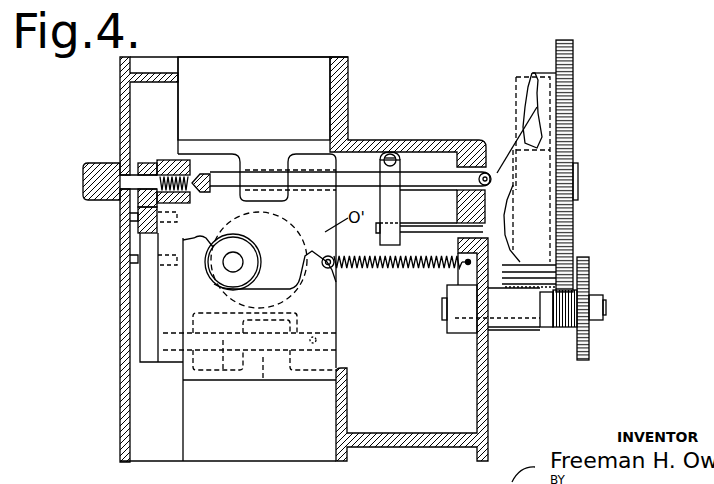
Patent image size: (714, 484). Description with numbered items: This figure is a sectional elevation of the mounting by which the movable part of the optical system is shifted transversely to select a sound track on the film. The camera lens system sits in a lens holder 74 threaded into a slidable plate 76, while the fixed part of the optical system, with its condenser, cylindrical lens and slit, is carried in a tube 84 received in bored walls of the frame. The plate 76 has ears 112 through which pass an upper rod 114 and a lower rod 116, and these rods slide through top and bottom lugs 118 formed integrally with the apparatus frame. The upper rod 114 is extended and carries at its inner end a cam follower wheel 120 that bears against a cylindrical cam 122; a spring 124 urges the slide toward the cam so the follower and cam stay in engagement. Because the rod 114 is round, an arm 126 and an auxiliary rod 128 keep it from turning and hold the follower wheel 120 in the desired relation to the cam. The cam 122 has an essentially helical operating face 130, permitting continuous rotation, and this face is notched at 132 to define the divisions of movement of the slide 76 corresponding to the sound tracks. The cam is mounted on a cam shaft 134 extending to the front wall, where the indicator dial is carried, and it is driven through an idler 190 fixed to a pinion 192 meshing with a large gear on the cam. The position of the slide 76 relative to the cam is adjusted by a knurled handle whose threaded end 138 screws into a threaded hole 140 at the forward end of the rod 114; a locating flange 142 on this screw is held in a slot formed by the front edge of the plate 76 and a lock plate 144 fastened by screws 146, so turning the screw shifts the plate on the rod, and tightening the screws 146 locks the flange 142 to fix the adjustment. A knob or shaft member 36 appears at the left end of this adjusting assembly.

The shaft 36 is at (88, 193).
The lens holder 74 is at (259, 257).
The slidable plate 76 is at (330, 282).
The tube 84 is at (287, 222).
The ears 112 is at (170, 158).
The upper rod 114 is at (226, 176).
The lower rod 116 is at (223, 358).
The lugs 118 is at (263, 165).
The cam follower wheel 120 is at (495, 170).
The cylindrical cam 122 is at (535, 177).
The spring 124 is at (402, 272).
The arm 126 is at (392, 207).
The auxiliary rod 128 is at (442, 230).
The helical operating face 130 is at (528, 102).
The notches 132 is at (537, 108).
The cam shaft 134 is at (577, 178).
The threaded end 138 is at (187, 157).
The threaded hole 140 is at (211, 158).
The locating flange 142 is at (152, 160).
The lock plate 144 is at (138, 198).
The screws 146 is at (132, 258).
The idler 190 is at (588, 272).
The pinion 192 is at (568, 332).